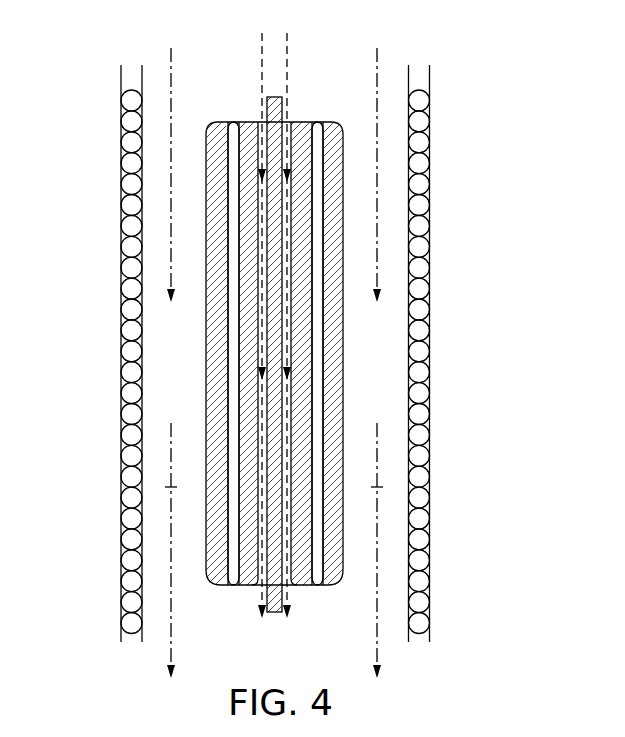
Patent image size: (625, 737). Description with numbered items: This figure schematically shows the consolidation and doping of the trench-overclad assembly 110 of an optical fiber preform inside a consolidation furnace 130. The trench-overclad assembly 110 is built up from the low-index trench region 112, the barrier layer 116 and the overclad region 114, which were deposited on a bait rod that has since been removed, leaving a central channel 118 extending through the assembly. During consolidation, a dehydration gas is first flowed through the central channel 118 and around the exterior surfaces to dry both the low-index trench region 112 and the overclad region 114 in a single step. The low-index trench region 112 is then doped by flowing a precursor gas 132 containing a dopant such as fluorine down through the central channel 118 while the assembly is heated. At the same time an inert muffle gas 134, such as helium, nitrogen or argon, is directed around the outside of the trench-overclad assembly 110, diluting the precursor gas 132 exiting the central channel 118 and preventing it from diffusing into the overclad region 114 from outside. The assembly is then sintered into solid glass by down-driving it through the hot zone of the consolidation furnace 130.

The trench-overclad assembly 110 is at (328, 98).
The low-index trench region 112 is at (252, 133).
The overclad region 114 is at (218, 573).
The barrier layer 116 is at (312, 573).
The central channel 118 is at (260, 398).
The consolidation furnace 130 is at (435, 97).
The precursor gas 132 is at (262, 40).
The inert muffle gas 134 is at (171, 52).